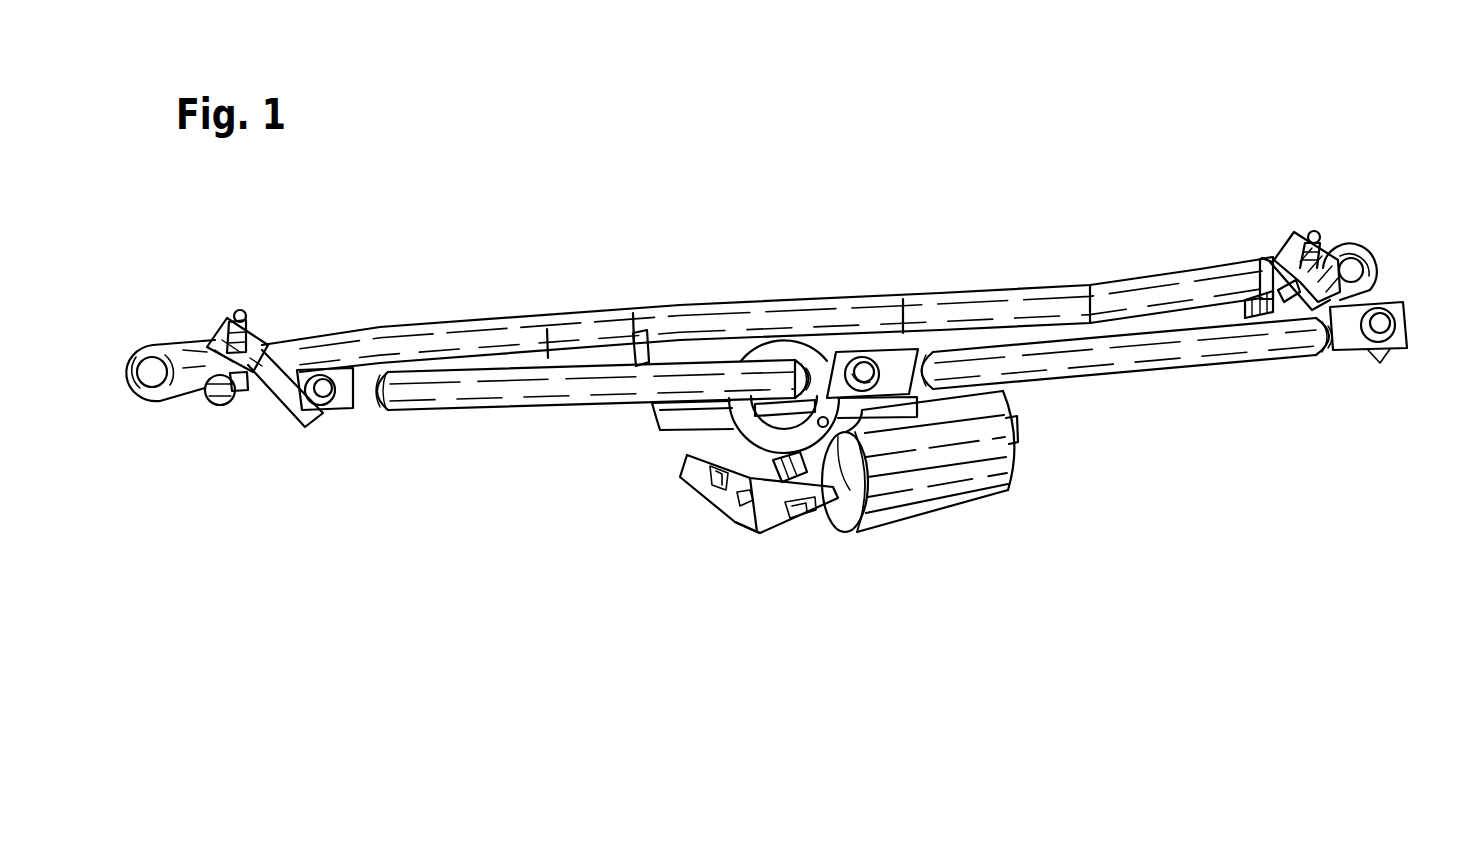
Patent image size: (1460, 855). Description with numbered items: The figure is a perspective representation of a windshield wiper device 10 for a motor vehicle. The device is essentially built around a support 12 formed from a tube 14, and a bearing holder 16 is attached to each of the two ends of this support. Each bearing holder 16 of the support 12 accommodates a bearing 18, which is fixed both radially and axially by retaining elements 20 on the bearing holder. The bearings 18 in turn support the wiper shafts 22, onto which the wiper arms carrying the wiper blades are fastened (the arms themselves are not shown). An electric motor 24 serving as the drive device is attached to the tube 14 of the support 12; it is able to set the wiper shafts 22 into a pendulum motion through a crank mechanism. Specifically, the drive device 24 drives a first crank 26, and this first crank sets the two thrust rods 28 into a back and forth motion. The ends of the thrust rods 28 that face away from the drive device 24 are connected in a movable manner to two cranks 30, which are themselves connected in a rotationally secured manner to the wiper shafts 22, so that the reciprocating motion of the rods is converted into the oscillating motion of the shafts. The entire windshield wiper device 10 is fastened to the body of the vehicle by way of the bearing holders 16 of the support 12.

The windshield wiper device 10 is at (900, 236).
The support 12 is at (606, 318).
The tube 14 is at (1033, 297).
The bearing holder 16 is at (139, 326).
The bearing 18 is at (211, 404).
The retaining element 20 is at (230, 398).
The wiper shaft 22 is at (247, 321).
The electric motor 24 is at (951, 477).
The first crank 26 is at (826, 356).
The thrust rod 28 is at (446, 394).
The crank 30 is at (283, 382).